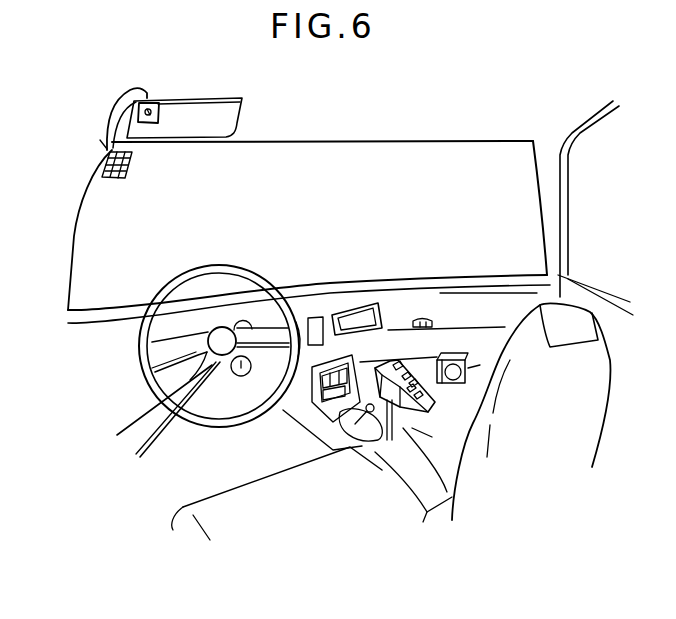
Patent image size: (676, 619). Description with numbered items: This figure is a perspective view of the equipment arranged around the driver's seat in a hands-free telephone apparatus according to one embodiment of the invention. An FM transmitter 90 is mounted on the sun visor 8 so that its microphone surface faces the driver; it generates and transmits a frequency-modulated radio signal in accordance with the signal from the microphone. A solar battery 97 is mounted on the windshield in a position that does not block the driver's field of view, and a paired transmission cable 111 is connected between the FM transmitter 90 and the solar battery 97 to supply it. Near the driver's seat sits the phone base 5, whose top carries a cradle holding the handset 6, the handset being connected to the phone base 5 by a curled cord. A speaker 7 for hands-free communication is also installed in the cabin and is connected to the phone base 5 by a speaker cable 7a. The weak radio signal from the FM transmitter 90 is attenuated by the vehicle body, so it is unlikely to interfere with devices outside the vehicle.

The sun visor 8 is at (241, 117).
The FM transmitter 90 is at (159, 113).
The paired transmission cable 111 is at (102, 137).
The solar battery 97 is at (115, 182).
The phone base 5 is at (383, 357).
The handset 6 is at (423, 403).
The speaker 7 is at (480, 365).
The speaker cable 7a is at (423, 360).